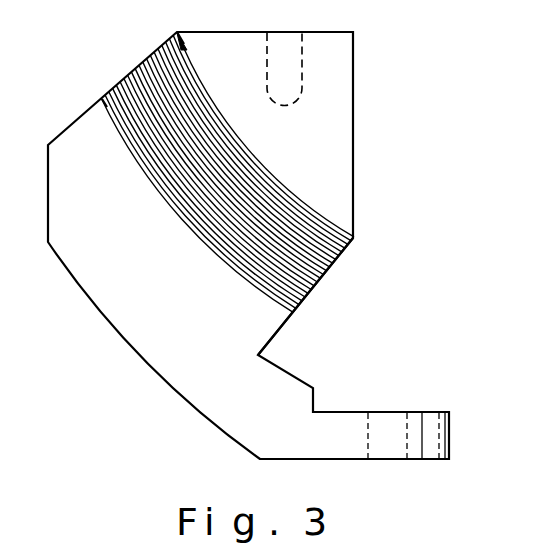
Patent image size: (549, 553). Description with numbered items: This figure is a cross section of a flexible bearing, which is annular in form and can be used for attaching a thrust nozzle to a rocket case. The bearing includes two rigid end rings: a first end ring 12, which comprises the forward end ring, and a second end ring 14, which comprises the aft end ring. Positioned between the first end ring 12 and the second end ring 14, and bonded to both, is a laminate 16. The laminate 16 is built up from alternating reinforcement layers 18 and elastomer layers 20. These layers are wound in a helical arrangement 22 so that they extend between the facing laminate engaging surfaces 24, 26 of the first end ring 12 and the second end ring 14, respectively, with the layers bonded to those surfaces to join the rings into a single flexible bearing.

The first end ring 12 is at (168, 366).
The second end ring 14 is at (333, 82).
The laminate 16 is at (128, 72).
The reinforcement layers 18 is at (102, 100).
The elastomer layers 20 is at (342, 240).
The helical arrangement 22 is at (406, 435).
The laminate engaging surface 24 is at (292, 326).
The laminate engaging surface 26 is at (173, 40).